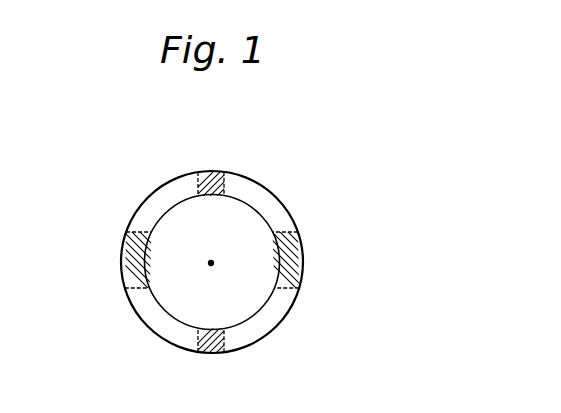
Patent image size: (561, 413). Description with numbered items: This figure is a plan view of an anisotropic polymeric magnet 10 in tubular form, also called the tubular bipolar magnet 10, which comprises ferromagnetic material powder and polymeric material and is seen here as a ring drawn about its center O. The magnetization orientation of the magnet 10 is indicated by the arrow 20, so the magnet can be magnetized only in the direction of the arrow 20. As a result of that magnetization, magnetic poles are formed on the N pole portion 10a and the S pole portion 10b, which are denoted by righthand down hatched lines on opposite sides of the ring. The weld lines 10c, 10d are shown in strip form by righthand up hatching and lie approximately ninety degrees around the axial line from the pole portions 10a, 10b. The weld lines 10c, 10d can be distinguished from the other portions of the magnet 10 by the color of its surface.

The anisotropic polymeric magnet 10 is at (283, 177).
The N pole portion 10a is at (303, 262).
The S pole portion 10b is at (121, 268).
The weld line 10c is at (211, 353).
The weld line 10d is at (210, 172).
The arrow 20 is at (340, 199).
The center point O is at (218, 258).